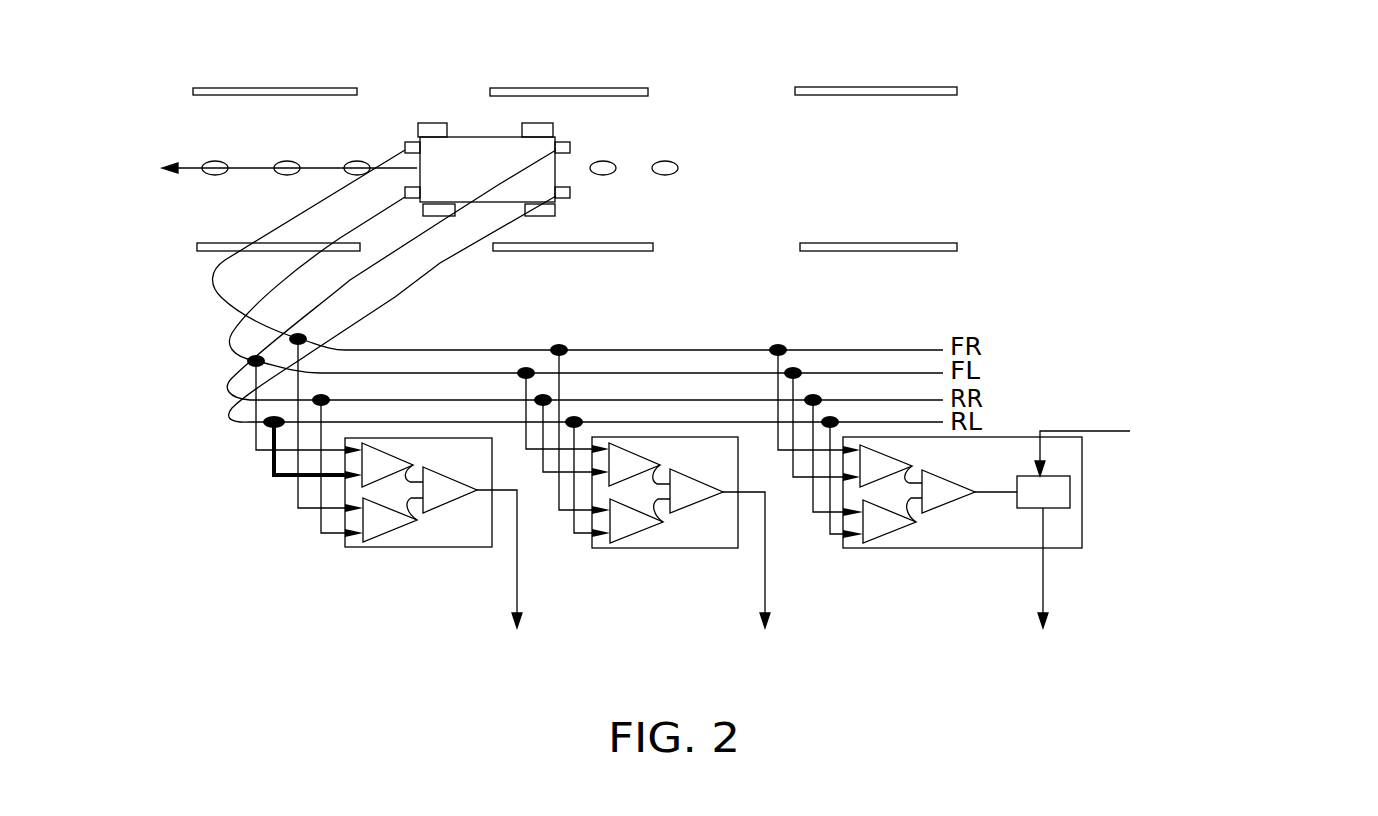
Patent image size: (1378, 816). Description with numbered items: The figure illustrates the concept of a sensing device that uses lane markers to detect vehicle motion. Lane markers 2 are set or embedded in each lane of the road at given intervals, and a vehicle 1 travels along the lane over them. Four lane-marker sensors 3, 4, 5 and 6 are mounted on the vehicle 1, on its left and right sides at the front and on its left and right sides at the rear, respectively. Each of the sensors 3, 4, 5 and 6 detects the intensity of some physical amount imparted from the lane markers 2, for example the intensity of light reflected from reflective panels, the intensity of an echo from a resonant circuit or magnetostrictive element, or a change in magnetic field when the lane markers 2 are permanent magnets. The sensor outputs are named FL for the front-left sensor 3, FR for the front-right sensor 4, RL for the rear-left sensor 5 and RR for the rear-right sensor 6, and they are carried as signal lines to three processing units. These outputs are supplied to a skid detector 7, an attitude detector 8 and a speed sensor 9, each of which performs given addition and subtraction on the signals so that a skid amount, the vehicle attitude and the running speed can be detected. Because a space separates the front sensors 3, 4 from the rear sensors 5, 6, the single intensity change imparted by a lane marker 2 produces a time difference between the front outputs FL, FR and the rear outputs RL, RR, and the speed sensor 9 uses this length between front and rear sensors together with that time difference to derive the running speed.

The vehicle 1 is at (485, 158).
The lane markers 2 is at (288, 176).
The lane-marker-sensor 3 is at (412, 198).
The lane-marker-sensor 4 is at (428, 150).
The lane-marker-sensor 5 is at (570, 192).
The lane-marker-sensor 6 is at (570, 149).
The skid detector 7 is at (357, 547).
The attitude detector 8 is at (612, 548).
The speed sensor 9 is at (903, 548).